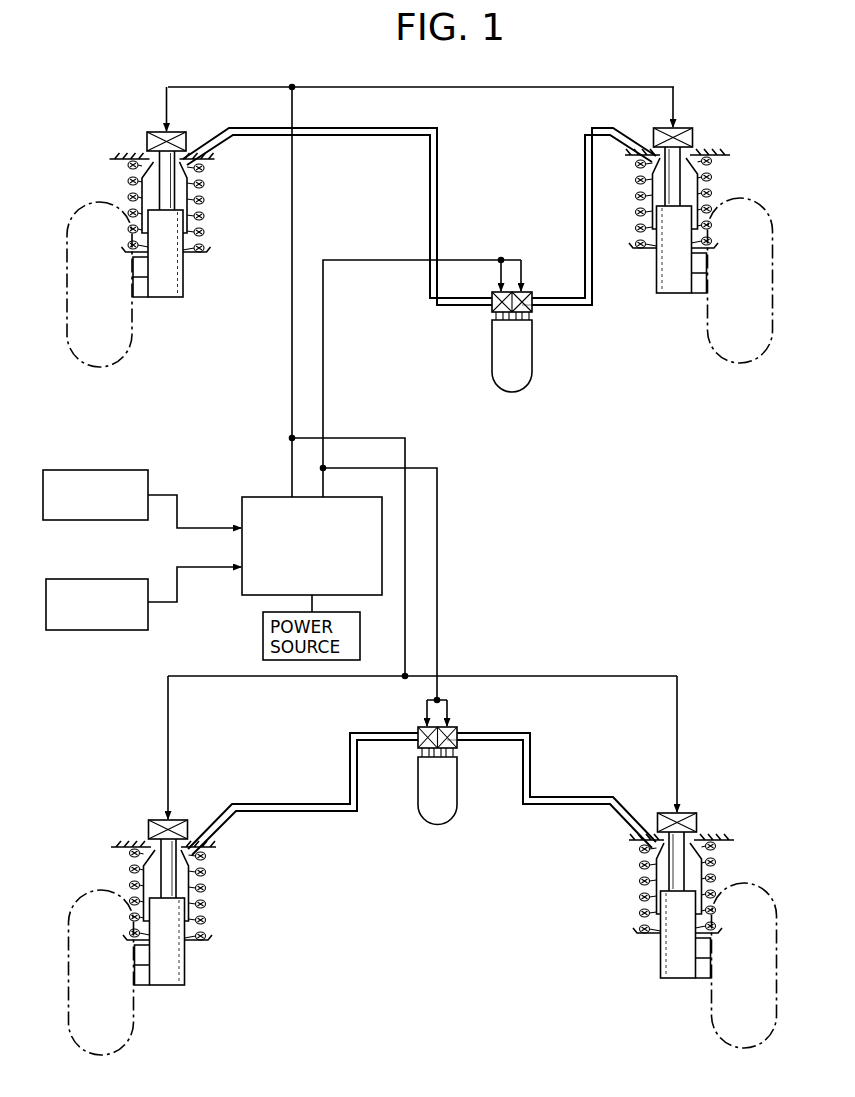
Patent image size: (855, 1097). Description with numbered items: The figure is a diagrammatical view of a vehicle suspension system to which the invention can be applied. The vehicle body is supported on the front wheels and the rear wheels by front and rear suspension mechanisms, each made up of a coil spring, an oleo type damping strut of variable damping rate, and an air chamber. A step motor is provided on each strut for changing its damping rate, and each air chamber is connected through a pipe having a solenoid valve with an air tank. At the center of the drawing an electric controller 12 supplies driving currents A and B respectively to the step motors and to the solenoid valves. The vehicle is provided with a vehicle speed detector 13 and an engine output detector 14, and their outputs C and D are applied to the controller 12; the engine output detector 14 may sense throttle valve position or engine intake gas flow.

The electric controller 12 is at (268, 497).
The vehicle speed detector 13 is at (123, 470).
The engine output detector 14 is at (123, 579).
The driving current A is at (290, 402).
The driving current B is at (325, 402).
The output of vehicle speed detector C is at (202, 528).
The output of engine output detector D is at (195, 567).